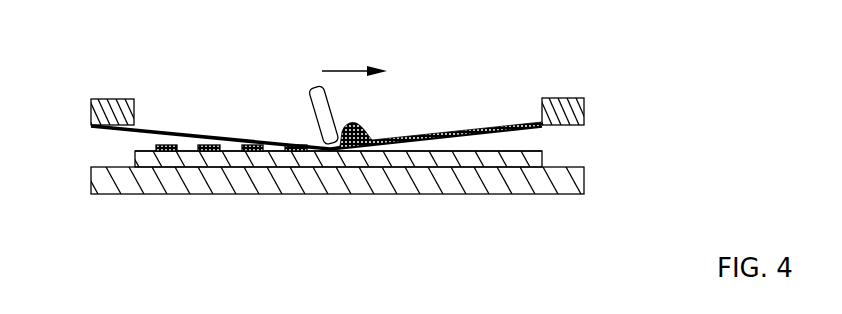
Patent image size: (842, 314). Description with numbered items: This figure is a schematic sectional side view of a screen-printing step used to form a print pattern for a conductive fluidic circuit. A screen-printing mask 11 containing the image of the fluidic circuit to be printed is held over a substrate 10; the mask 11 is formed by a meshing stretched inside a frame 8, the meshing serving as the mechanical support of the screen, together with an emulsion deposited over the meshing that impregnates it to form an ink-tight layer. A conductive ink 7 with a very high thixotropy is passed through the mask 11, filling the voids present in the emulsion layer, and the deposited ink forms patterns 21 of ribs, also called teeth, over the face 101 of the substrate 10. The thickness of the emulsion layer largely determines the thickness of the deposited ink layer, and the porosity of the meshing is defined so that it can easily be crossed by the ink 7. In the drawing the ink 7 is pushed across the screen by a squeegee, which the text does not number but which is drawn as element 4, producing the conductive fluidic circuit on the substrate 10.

The squeegee 4 is at (338, 113).
The conductive ink 7 is at (362, 122).
The frame 8 is at (102, 98).
The substrate 10 is at (533, 157).
The screen-printing mask 11 is at (583, 82).
The patterns of ribs 21 is at (157, 139).
The face of the substrate 101 is at (520, 148).